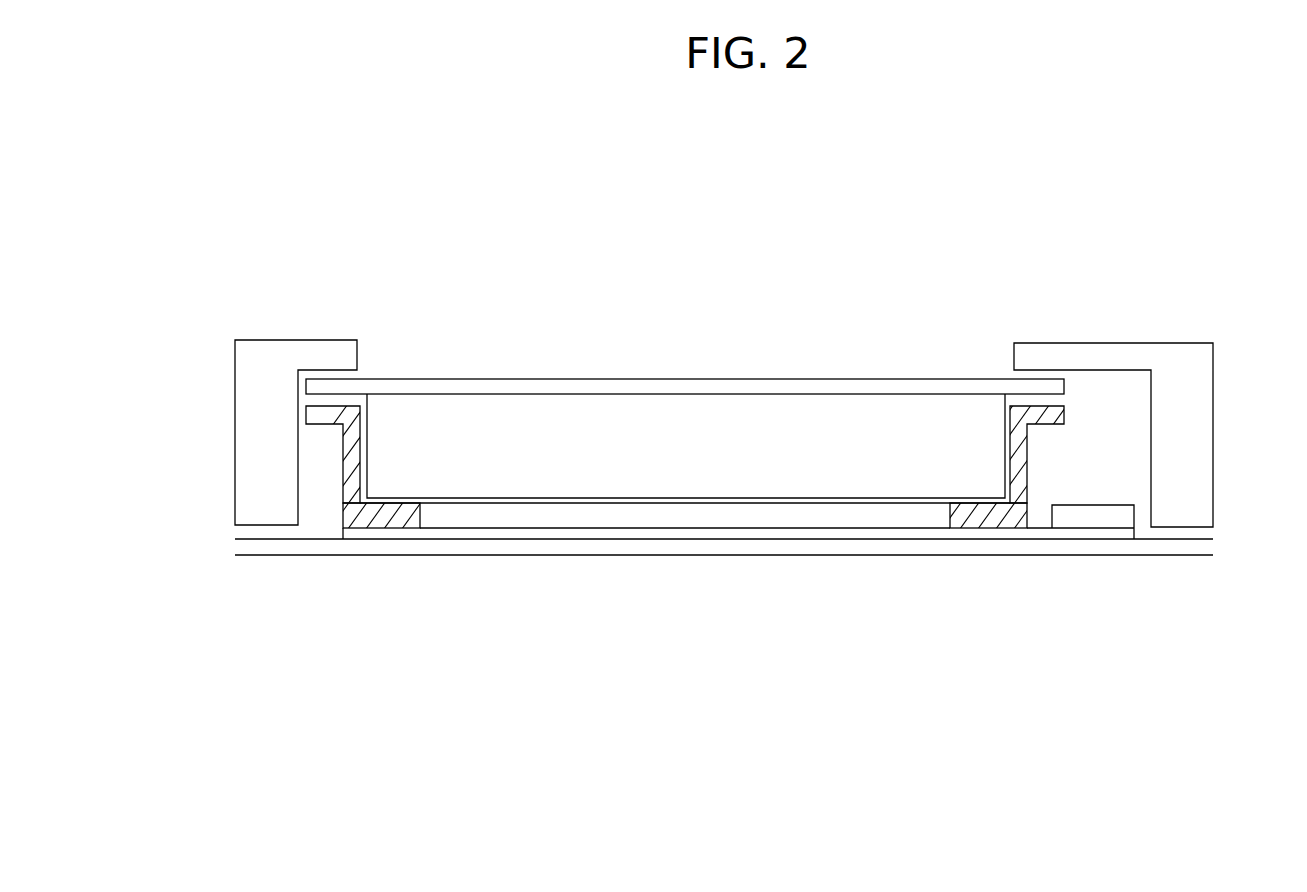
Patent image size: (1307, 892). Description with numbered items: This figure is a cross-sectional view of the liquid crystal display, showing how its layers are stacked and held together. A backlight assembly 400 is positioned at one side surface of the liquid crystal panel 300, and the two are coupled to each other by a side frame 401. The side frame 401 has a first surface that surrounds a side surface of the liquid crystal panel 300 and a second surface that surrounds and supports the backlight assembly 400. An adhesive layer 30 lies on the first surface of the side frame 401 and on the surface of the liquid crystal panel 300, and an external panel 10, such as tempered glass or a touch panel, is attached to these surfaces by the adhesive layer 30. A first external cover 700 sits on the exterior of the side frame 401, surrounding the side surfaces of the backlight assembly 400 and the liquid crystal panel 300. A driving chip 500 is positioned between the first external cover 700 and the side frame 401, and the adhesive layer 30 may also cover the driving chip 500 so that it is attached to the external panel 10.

The external panel 10 is at (1200, 545).
The adhesive layer 30 is at (973, 532).
The liquid crystal panel 300 is at (695, 517).
The backlight assembly 400 is at (768, 408).
The side frame 401 is at (340, 408).
The driving chip 500 is at (1098, 518).
The first external cover 700 is at (260, 414).